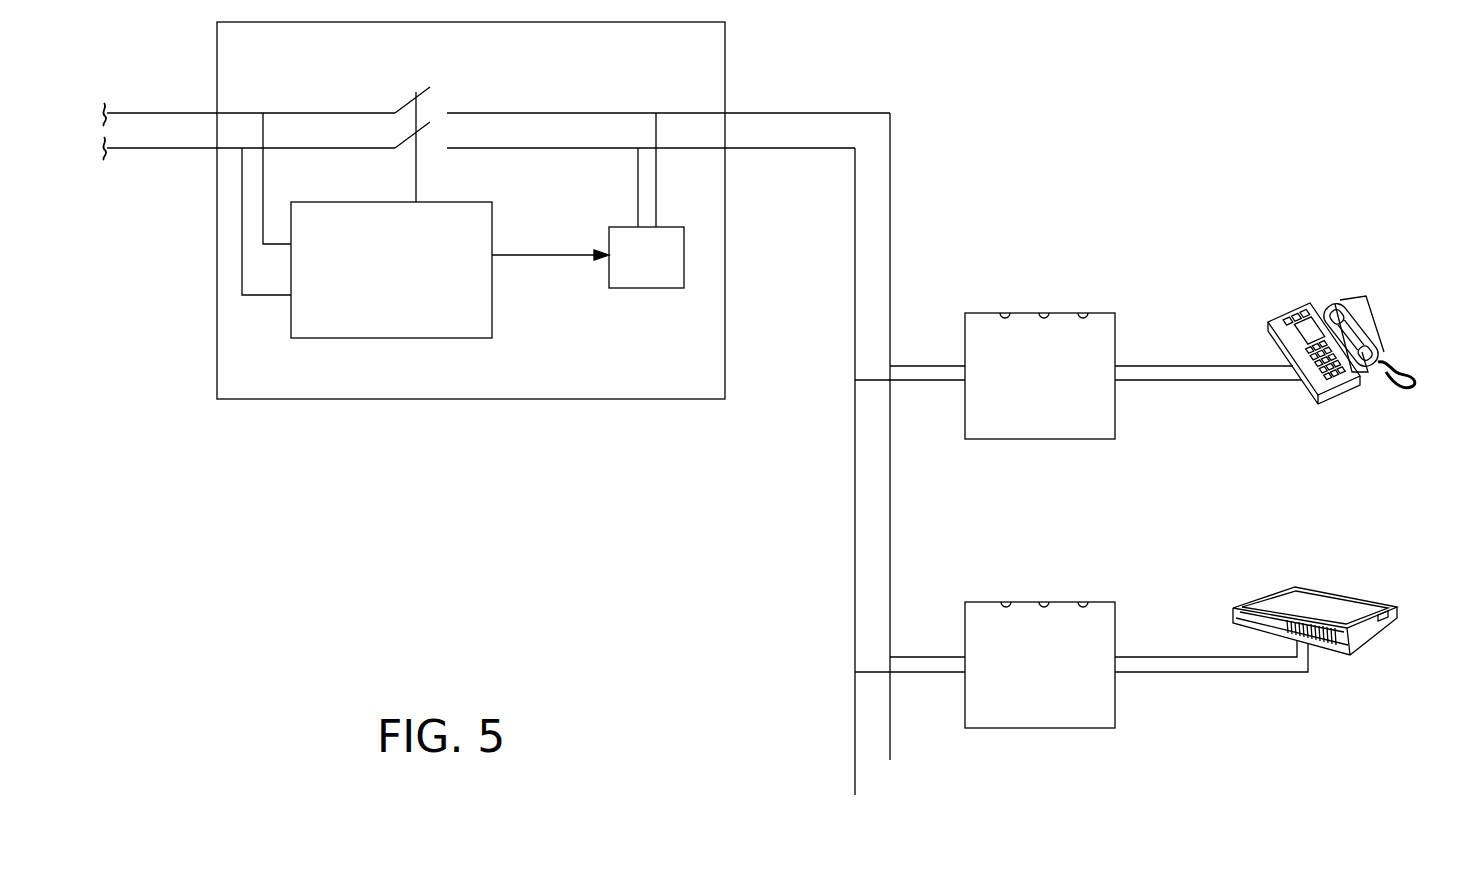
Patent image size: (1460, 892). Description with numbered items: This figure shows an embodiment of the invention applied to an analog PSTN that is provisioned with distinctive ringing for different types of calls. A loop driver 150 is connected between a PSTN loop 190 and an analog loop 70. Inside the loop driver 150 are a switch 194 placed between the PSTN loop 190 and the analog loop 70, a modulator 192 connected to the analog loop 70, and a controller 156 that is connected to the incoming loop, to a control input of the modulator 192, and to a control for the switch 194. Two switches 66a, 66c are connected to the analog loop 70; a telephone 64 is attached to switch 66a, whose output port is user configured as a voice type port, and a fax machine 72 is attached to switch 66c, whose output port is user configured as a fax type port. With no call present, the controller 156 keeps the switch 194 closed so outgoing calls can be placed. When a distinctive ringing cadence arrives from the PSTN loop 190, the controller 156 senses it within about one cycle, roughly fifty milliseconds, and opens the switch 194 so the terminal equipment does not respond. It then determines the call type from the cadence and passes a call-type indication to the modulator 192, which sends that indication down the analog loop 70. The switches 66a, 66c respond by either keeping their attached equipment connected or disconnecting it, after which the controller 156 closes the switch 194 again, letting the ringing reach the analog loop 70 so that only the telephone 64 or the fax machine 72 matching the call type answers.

The loop driver 150 is at (262, 398).
The controller 156 is at (346, 333).
The PSTN loop 190 is at (168, 158).
The modulator 192 is at (630, 281).
The switch 194 is at (426, 84).
The analog loop 70 is at (890, 181).
The switch 66a is at (1053, 423).
The switch 66c is at (1053, 713).
The telephone 64 is at (1360, 332).
The fax machine 72 is at (1370, 605).